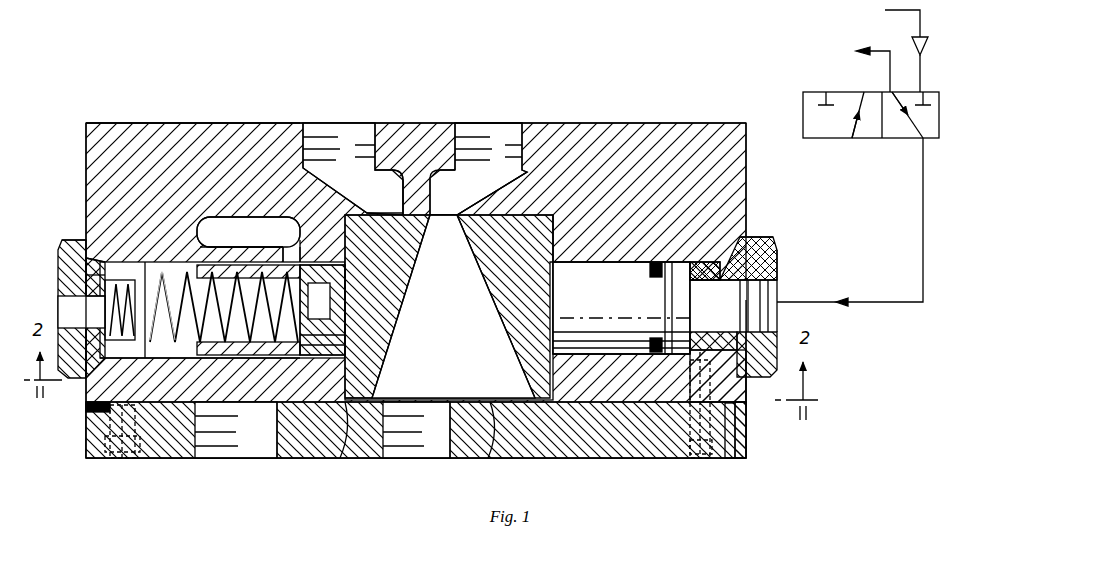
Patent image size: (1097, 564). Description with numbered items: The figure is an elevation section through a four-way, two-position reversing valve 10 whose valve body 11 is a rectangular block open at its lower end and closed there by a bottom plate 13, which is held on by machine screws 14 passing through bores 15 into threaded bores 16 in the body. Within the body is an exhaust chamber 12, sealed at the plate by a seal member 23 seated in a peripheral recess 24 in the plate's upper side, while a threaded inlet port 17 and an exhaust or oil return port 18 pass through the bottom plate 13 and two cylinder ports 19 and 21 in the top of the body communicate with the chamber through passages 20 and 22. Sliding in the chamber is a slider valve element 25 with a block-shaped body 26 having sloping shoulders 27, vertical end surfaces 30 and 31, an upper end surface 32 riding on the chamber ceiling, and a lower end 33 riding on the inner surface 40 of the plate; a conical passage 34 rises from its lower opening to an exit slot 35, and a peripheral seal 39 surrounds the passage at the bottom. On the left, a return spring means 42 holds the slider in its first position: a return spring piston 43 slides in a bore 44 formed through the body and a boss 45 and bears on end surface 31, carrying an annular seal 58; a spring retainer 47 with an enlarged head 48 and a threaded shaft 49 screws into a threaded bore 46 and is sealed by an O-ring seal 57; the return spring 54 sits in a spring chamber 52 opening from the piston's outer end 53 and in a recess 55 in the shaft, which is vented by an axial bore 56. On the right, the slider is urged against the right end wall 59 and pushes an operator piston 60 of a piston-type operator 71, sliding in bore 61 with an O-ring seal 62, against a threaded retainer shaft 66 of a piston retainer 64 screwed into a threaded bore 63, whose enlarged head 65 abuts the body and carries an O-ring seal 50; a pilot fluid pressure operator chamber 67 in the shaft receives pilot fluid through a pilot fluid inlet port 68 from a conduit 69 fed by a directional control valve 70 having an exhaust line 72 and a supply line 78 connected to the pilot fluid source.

The valve 10 is at (231, 121).
The valve body 11 is at (116, 130).
The exhaust chamber 12 is at (278, 219).
The bottom plate 13 is at (609, 460).
The machine screws 14 is at (134, 458).
The bores 15 is at (120, 452).
The threaded bores 16 is at (152, 340).
The inlet port 17 is at (440, 440).
The exhaust or oil return port 18 is at (272, 432).
The outlet or cylinder port 19 is at (366, 168).
The passage 20 is at (339, 160).
The outlet or cylinder port 21 is at (520, 140).
The passage 22 is at (479, 195).
The seal member 23 is at (730, 460).
The peripheral recess 24 is at (748, 455).
The slider valve element 25 is at (530, 260).
The slider valve element body 26 is at (503, 216).
The sloping shoulders 27 is at (372, 228).
The vertical end surface 30 is at (553, 305).
The vertical end surface 31 is at (345, 315).
The upper end surface 32 is at (445, 216).
The lower end 33 is at (388, 396).
The conical passage 34 is at (500, 380).
The exit opening or slot 35 is at (447, 215).
The peripheral seal 39 is at (340, 459).
The inner surface of bottom plate 40 is at (490, 404).
The return spring means 42 is at (318, 265).
The return spring piston 43 is at (316, 355).
The bore 44 is at (248, 232).
The boss 45 is at (262, 252).
The threaded bore 46 is at (110, 258).
The spring retainer 47 is at (64, 238).
The enlarged head 48 is at (75, 383).
The threaded shaft 49 is at (97, 405).
The O-ring seal 50 is at (742, 266).
The spring chamber 52 is at (322, 265).
The outer end 53 is at (180, 358).
The return spring 54 is at (240, 358).
The recess 55 is at (95, 276).
The axial bore 56 is at (82, 303).
The O-ring seal 57 is at (81, 312).
The annular seal 58 is at (228, 413).
The right end wall 59 is at (549, 263).
The operator piston 60 is at (613, 301).
The bore 61 is at (657, 264).
The O-ring seal 62 is at (693, 385).
The threaded bore 63 is at (762, 272).
The piston retainer 64 is at (758, 240).
The enlarged head 65 is at (744, 402).
The threaded retainer shaft 66 is at (735, 448).
The pilot fluid pressure operator chamber 67 is at (760, 282).
The pilot fluid inlet port 68 is at (786, 290).
The conduit 69 is at (893, 308).
The directional control valve 70 is at (800, 106).
The piston-type operator 71 is at (573, 405).
The exhaust line 72 is at (889, 74).
The supply line 78 is at (913, 30).